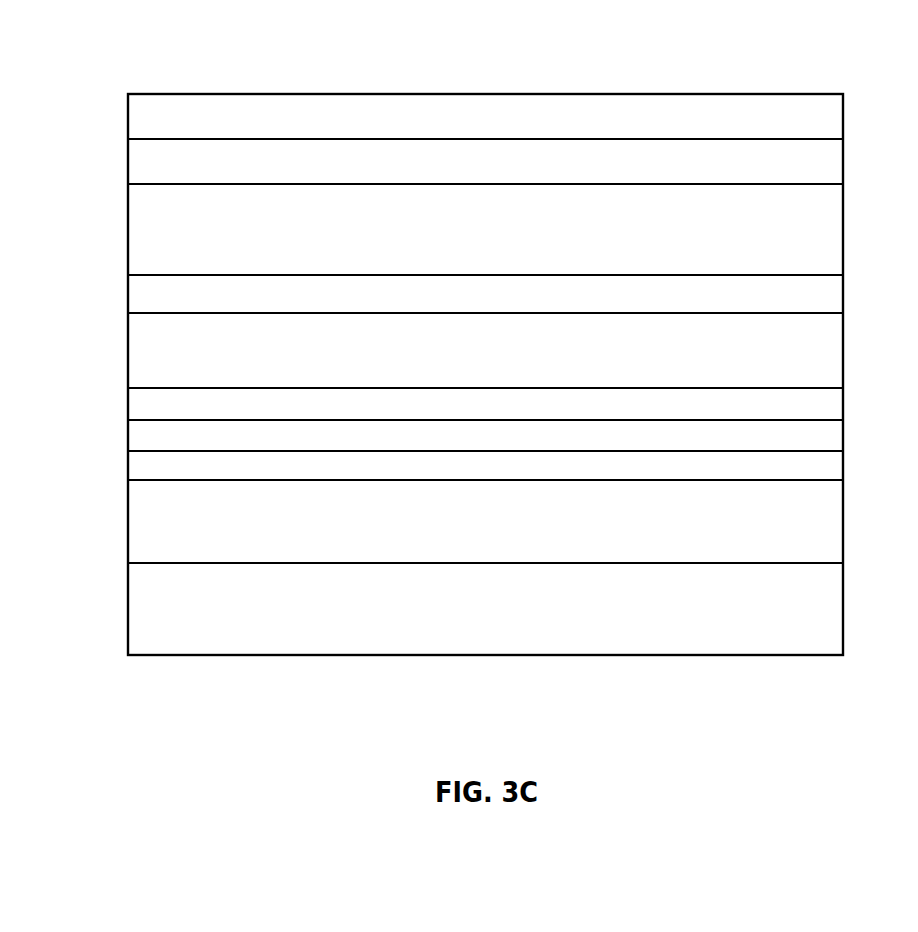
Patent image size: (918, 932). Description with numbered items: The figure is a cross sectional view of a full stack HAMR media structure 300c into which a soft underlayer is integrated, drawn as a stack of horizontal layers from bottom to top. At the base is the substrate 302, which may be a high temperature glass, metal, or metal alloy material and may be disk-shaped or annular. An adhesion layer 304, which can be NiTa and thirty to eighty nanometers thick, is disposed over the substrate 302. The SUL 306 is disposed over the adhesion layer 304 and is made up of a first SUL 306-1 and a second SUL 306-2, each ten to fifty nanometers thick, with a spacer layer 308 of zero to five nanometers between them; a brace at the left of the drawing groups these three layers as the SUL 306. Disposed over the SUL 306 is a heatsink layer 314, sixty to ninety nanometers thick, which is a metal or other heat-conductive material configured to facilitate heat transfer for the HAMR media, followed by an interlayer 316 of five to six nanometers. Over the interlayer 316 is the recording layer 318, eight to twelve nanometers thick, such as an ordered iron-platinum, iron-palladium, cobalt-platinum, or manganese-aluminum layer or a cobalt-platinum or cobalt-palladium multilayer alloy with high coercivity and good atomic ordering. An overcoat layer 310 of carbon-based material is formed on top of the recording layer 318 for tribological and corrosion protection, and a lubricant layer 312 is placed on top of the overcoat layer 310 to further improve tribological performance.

The full stack HAMR media structure 300c is at (494, 56).
The lubricant layer 312 is at (563, 127).
The overcoat layer 310 is at (563, 171).
The recording layer 318 is at (502, 252).
The interlayer 316 is at (547, 305).
The heatsink layer 314 is at (545, 362).
The SUL 306 is at (120, 480).
The second SUL 306-2 is at (533, 415).
The spacer layer 308 is at (565, 445).
The first SUL 306-1 is at (533, 475).
The adhesion layer 304 is at (502, 544).
The substrate 302 is at (502, 631).